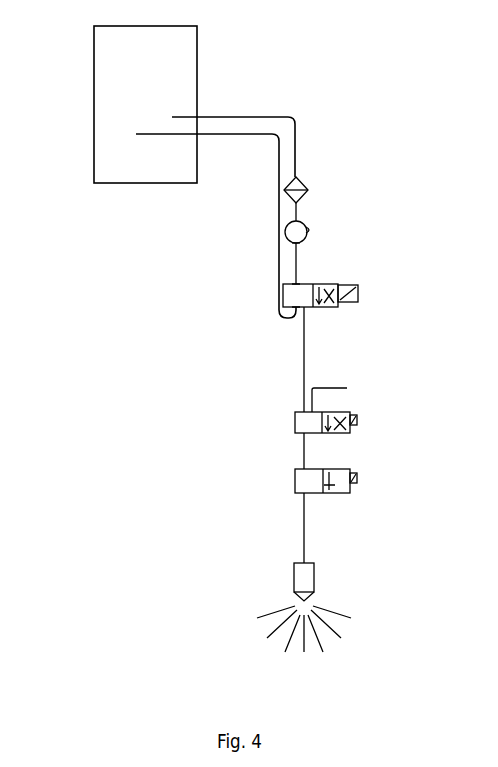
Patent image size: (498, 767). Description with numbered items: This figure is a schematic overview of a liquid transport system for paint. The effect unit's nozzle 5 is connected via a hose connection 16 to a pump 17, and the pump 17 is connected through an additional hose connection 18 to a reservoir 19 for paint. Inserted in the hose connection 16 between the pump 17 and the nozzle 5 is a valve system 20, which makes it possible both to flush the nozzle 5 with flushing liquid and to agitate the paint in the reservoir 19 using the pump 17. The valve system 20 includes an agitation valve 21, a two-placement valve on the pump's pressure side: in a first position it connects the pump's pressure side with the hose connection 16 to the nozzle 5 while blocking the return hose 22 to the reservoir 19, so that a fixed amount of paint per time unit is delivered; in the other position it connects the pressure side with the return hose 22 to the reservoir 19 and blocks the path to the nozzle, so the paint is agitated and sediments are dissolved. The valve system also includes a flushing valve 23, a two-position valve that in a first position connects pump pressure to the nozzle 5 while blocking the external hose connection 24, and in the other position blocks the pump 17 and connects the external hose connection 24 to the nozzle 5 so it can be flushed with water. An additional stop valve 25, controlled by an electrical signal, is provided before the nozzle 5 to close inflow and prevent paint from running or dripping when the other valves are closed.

The nozzle 5 is at (294, 583).
The hose connection 16 is at (296, 266).
The pump 17 is at (305, 226).
The additional hose connection 18 is at (262, 116).
The reservoir 19 is at (107, 110).
The valve system 20 is at (143, 435).
The agitation valve 21 is at (358, 288).
The return hose 22 is at (232, 135).
The flushing valve 23 is at (357, 420).
The external hose connection 24 is at (347, 388).
The additional stop valve 25 is at (357, 480).